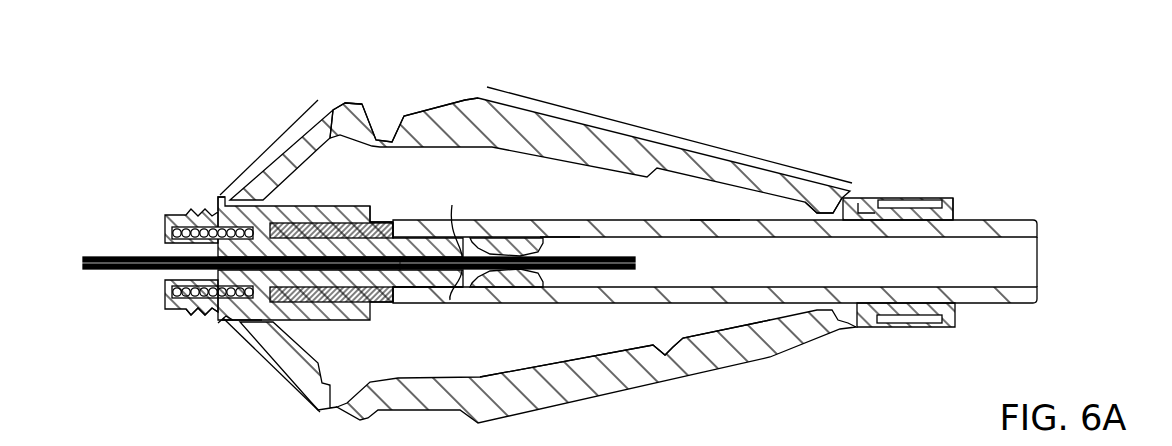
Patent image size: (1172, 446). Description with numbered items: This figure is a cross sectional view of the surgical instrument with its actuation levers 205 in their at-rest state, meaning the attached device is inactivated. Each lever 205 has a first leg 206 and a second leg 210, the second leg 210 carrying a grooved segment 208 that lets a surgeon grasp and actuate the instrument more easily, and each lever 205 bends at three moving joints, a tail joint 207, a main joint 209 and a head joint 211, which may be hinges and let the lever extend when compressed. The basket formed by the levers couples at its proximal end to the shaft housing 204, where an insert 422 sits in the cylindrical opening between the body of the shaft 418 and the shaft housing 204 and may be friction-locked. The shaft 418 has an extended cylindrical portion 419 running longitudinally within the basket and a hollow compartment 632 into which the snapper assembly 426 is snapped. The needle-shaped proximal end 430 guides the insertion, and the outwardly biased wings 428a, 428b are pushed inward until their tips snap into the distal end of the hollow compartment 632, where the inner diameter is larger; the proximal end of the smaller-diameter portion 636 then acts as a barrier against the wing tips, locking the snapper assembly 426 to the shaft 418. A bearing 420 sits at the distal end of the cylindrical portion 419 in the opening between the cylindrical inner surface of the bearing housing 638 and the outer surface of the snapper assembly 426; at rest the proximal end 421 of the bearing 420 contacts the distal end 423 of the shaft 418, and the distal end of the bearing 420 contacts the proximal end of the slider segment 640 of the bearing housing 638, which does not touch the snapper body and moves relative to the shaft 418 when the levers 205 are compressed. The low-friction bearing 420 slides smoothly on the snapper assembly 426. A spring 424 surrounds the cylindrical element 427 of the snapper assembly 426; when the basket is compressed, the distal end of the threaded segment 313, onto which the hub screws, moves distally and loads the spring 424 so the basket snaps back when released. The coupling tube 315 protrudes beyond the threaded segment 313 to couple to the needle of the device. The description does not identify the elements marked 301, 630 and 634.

The shaft housing 204 is at (961, 192).
The actuation lever 205 is at (607, 124).
The first leg 206 is at (667, 131).
The tail joint 207 is at (855, 335).
The grooved segment 208 is at (482, 92).
The main joint 209 is at (332, 96).
The second leg 210 is at (273, 147).
The head joint 211 is at (213, 188).
The catheter shaft 301 is at (1018, 217).
The threaded segment 313 is at (182, 317).
The coupling tube 315 is at (93, 253).
The shaft 418 is at (799, 206).
The extended cylindrical portion 419 is at (712, 220).
The bearing 420 is at (318, 206).
The proximal end of bearing 421 is at (390, 214).
The insert 422 is at (915, 193).
The distal end of shaft 423 is at (391, 222).
The spring 424 is at (187, 208).
The snapper assembly 426 is at (347, 303).
The cylindrical element 427 is at (165, 288).
The wing 428a is at (503, 240).
The wing 428b is at (500, 296).
The needle-shaped proximal end 430 is at (640, 268).
The flexure 630 is at (458, 280).
The hollow compartment 632 is at (558, 242).
The lower shell wall 634 is at (781, 265).
The portion 636 is at (388, 311).
The bearing housing 638 is at (272, 323).
The slider segment 640 is at (214, 322).